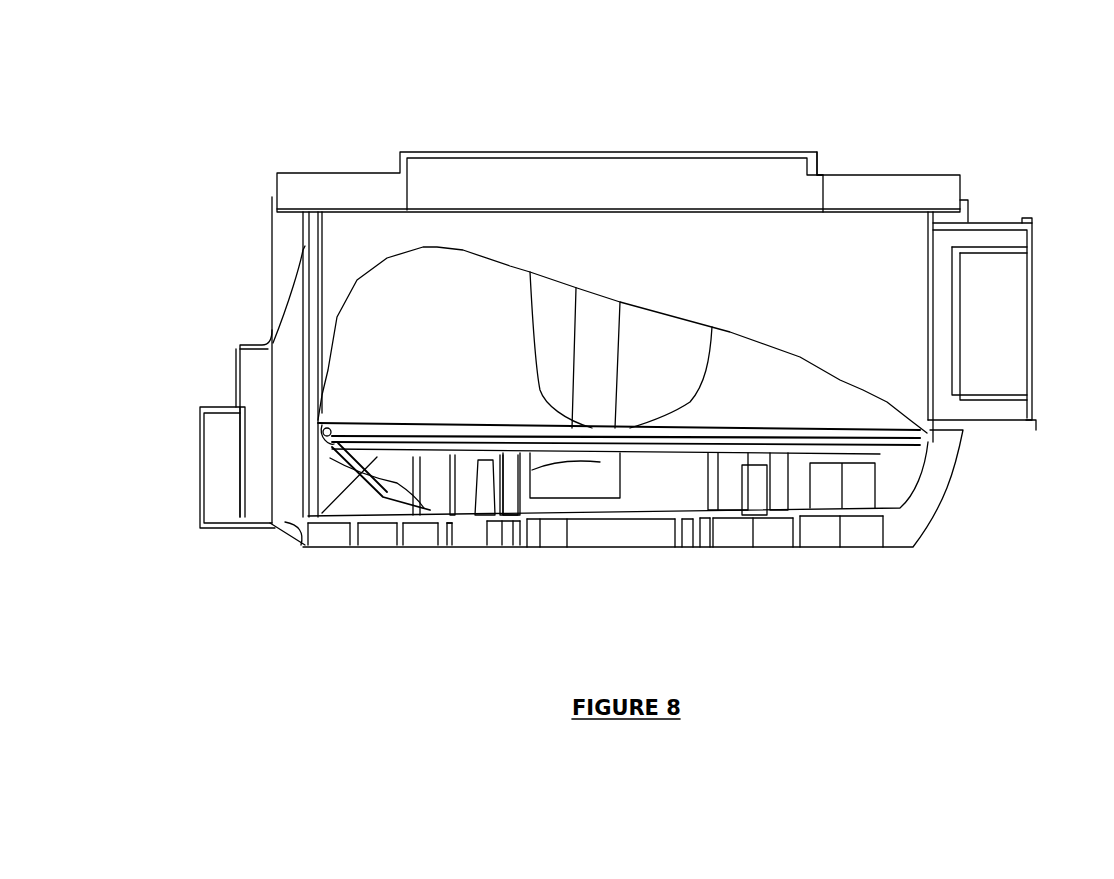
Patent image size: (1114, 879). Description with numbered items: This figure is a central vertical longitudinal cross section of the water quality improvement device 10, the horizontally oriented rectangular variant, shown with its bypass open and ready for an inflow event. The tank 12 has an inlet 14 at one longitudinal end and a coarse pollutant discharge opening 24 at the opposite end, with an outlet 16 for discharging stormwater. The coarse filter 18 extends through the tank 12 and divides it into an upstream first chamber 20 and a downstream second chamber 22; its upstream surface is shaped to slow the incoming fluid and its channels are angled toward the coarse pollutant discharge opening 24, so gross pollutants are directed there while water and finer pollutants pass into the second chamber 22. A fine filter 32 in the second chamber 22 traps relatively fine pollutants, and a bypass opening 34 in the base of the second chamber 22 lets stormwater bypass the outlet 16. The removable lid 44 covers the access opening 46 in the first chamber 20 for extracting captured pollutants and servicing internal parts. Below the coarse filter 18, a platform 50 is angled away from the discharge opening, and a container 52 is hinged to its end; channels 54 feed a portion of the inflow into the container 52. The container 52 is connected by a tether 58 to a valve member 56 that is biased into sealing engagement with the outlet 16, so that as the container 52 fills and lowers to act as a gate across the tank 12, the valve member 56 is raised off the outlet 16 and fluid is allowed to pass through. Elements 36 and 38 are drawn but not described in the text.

The water quality improvement device 10 is at (1000, 108).
The tank 12 is at (928, 467).
The inlet 14 is at (1005, 362).
The outlet 16 is at (657, 530).
The coarse filter 18 is at (395, 300).
The first region/chamber 20 is at (858, 303).
The second region/chamber 22 is at (803, 487).
The coarse pollutant discharge opening 24 is at (215, 488).
The fine filter 32 is at (497, 493).
The bypass opening 34 is at (358, 497).
The support member 36 is at (545, 470).
The rib 38 is at (472, 485).
The lid 44 is at (608, 156).
The access opening 46 is at (730, 190).
The platform 50 is at (437, 467).
The container 52 is at (400, 467).
The channels 54 is at (310, 525).
The valve member 56 is at (597, 483).
The tether 58 is at (448, 530).